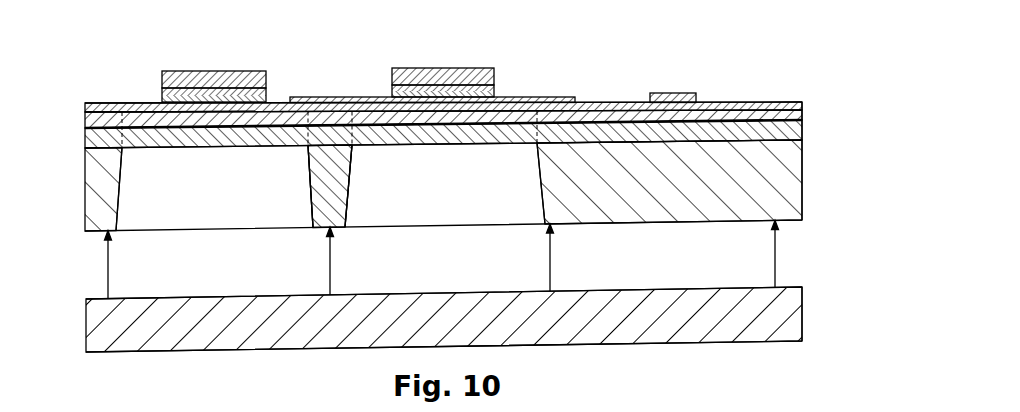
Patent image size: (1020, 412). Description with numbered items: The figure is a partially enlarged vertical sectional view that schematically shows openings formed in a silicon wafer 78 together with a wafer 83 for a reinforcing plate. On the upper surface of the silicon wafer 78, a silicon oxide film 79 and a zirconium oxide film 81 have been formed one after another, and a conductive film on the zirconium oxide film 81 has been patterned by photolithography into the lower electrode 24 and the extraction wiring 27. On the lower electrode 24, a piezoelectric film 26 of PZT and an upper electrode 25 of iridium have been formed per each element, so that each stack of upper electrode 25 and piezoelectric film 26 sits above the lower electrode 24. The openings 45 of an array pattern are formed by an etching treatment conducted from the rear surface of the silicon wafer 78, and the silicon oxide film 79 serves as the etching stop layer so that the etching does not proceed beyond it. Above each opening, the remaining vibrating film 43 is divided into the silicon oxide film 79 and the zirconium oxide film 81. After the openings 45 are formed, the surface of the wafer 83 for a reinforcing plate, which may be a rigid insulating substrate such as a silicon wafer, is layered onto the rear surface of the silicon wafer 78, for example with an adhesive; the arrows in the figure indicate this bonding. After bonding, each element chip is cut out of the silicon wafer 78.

The lower electrode 24 is at (548, 97).
The upper electrode 25 is at (213, 71).
The piezoelectric film 26 is at (162, 96).
The extraction wiring 27 is at (672, 93).
The vibrating film 43 is at (143, 150).
The openings 45 is at (310, 202).
The silicon wafer 78 is at (803, 184).
The silicon oxide film 79 is at (803, 127).
The zirconium oxide film 81 is at (803, 103).
The wafer for a reinforcing plate 83 is at (793, 313).